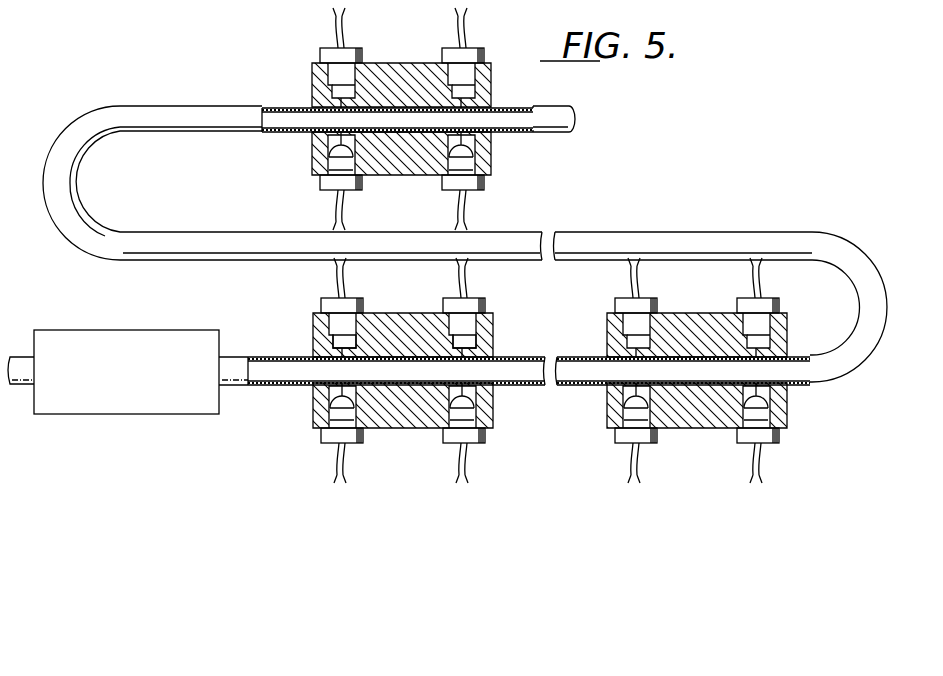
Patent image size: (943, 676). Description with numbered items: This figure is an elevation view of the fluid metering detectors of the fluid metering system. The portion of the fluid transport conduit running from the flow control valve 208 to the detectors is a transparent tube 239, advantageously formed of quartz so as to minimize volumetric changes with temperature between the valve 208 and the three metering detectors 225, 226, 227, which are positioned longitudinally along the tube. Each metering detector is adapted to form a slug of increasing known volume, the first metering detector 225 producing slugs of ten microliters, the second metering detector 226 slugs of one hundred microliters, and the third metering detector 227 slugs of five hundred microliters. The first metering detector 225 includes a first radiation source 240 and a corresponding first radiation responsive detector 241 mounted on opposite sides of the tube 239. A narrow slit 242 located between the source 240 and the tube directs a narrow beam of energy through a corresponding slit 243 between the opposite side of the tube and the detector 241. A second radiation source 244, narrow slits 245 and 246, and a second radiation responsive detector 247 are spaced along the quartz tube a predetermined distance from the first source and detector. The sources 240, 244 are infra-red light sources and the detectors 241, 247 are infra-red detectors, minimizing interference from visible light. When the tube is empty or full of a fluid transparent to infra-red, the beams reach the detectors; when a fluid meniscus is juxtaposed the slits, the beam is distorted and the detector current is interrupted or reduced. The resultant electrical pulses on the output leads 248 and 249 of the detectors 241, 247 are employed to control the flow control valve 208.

The flow control valve 208 is at (78, 330).
The first metering detector 225 is at (308, 312).
The second metering detector 226 is at (789, 410).
The third metering detector 227 is at (310, 62).
The transparent tube 239 is at (275, 333).
The first radiation source 240 is at (368, 305).
The first radiation responsive detector 241 is at (335, 437).
The narrow slit 242 is at (346, 347).
The slit 243 is at (335, 392).
The second radiation source 244 is at (485, 302).
The narrow slit 245 is at (466, 349).
The narrow slit 246 is at (471, 392).
The second radiation responsive detector 247 is at (484, 438).
The output lead 248 is at (334, 454).
The output lead 249 is at (470, 454).